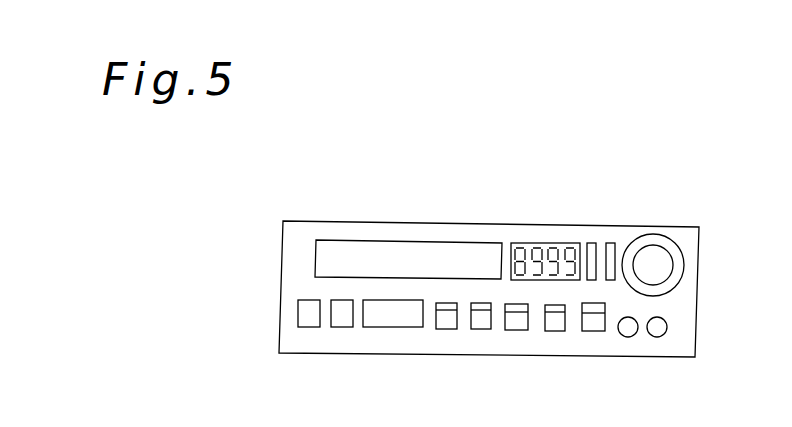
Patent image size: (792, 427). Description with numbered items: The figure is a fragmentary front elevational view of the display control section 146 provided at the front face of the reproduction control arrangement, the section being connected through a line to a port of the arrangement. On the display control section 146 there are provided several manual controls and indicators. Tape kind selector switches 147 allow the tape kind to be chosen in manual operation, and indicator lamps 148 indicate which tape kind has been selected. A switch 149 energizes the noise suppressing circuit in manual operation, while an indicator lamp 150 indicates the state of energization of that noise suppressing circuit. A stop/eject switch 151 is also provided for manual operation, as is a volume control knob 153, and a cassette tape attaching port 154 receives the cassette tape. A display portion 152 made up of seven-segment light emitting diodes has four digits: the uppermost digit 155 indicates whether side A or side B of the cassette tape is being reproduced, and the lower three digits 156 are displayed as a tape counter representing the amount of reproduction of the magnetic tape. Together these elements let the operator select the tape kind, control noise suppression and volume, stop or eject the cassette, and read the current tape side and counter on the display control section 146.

The display control section 146 is at (688, 277).
The tape kind selector switches 147 is at (553, 322).
The indicator lamps 148 is at (545, 305).
The switch 149 is at (593, 323).
The indicator lamp 150 is at (603, 304).
The stop/eject switch 151 is at (370, 320).
The display portion 152 is at (570, 191).
The volume control knob 153 is at (650, 257).
The cassette tape attaching port 154 is at (347, 255).
The uppermost digit 155 is at (520, 246).
The lower three digits 156 is at (538, 246).